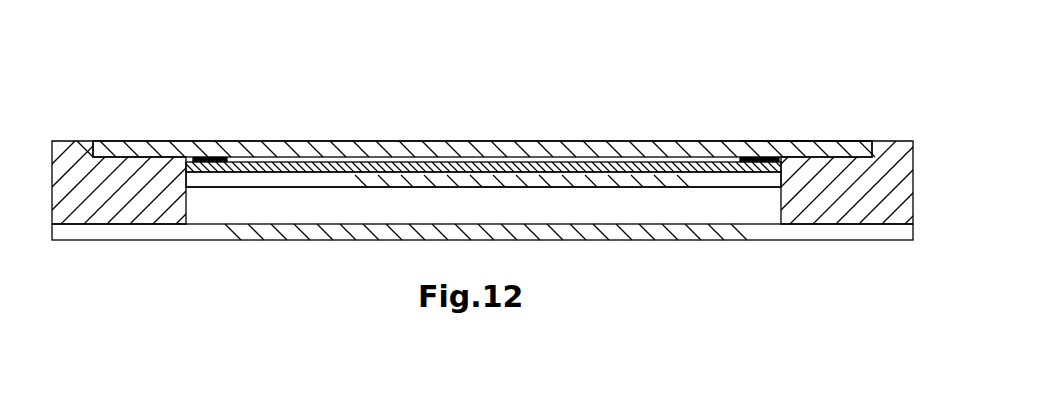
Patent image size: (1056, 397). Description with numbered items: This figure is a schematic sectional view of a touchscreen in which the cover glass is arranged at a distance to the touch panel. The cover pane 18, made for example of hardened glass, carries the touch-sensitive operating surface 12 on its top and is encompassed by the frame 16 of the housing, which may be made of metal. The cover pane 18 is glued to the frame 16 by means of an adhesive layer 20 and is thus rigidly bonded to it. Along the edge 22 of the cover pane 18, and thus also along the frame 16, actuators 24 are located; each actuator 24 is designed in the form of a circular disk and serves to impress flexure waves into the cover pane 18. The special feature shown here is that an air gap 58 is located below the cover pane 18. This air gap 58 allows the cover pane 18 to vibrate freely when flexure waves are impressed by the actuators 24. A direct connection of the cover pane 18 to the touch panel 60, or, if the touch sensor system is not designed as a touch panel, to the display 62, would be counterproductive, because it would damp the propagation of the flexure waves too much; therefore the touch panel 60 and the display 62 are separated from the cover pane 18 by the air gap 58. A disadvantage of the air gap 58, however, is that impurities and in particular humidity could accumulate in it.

The touch-sensitive operating surface 12 is at (203, 142).
The frame 16 is at (878, 195).
The cover pane 18 is at (450, 142).
The adhesive layer 20 is at (155, 142).
The edge 22 is at (820, 141).
The actuator 24 is at (765, 131).
The air gap 58 is at (493, 161).
The touch panel 60 is at (648, 172).
The display 62 is at (740, 178).